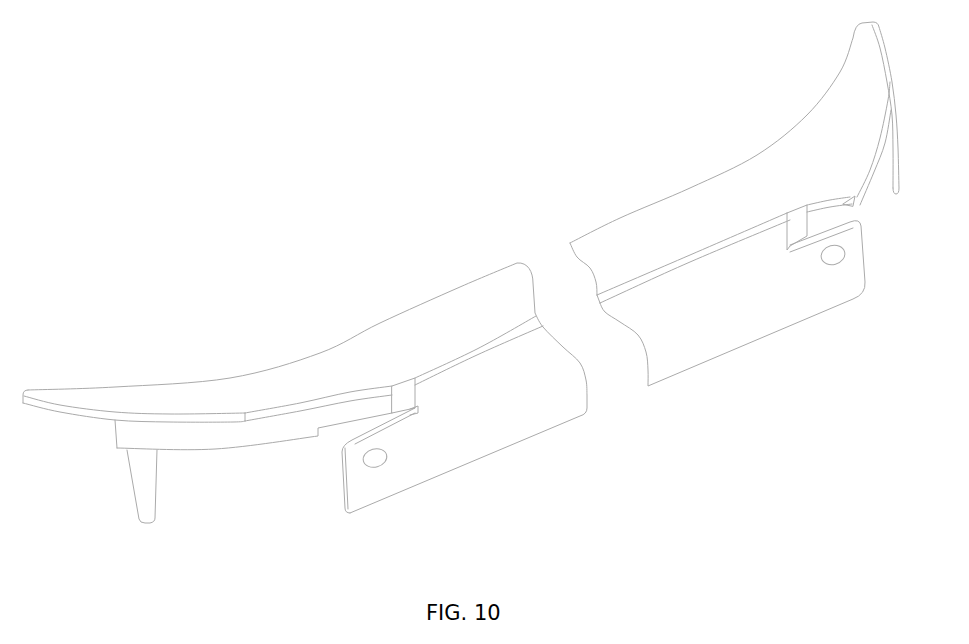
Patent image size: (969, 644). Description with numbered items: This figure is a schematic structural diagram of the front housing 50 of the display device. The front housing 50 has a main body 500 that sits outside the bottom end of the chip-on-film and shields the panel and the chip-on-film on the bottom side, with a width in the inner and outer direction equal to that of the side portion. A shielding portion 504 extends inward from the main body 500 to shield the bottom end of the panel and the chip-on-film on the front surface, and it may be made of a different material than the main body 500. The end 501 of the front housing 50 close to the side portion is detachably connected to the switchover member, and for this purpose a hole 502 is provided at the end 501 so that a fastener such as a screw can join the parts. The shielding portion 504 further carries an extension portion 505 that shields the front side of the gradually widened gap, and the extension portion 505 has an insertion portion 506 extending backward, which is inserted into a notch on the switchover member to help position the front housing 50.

The front housing 50 is at (487, 224).
The main body 500 is at (515, 363).
The end of the front housing 501 is at (357, 481).
The hole 502 is at (372, 463).
The shielding portion 504 is at (380, 363).
The extension portion 505 is at (57, 394).
The insertion portion 506 is at (145, 475).